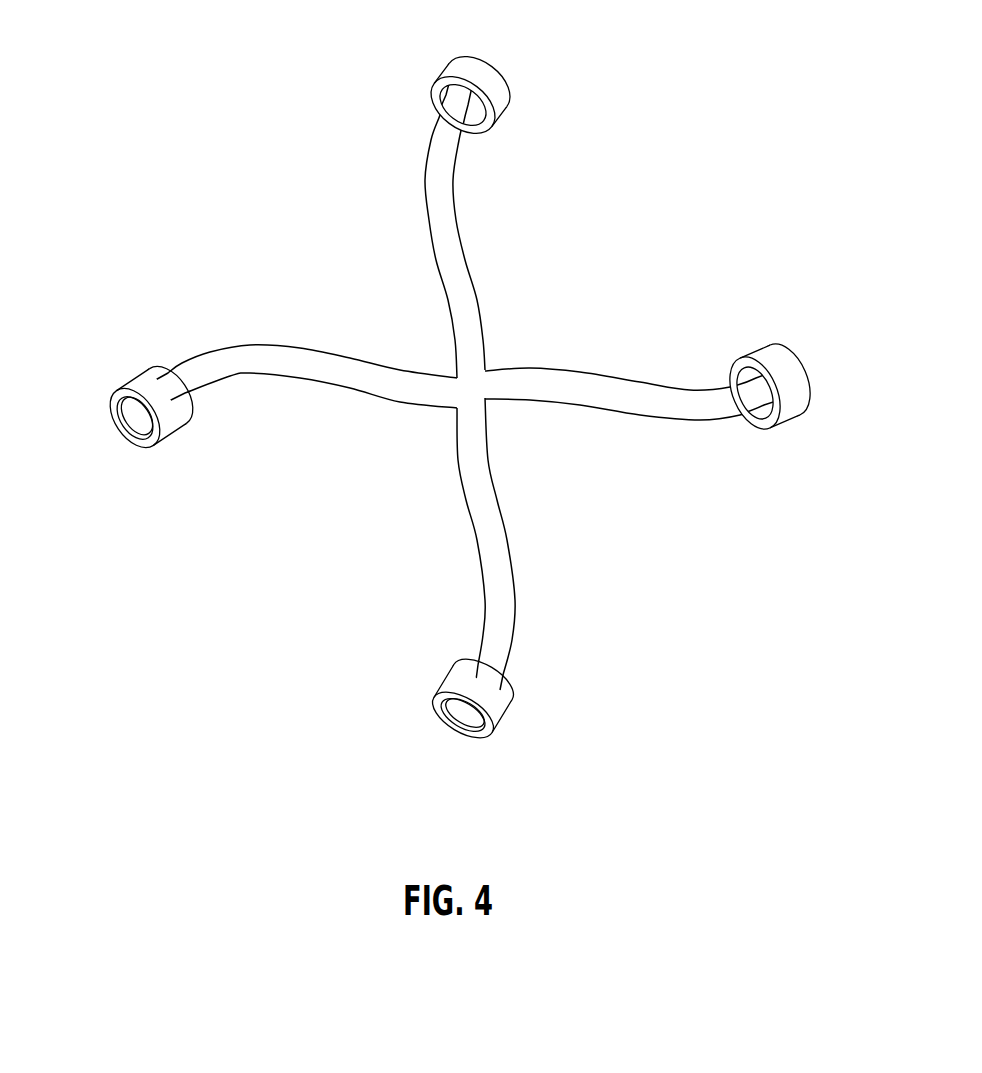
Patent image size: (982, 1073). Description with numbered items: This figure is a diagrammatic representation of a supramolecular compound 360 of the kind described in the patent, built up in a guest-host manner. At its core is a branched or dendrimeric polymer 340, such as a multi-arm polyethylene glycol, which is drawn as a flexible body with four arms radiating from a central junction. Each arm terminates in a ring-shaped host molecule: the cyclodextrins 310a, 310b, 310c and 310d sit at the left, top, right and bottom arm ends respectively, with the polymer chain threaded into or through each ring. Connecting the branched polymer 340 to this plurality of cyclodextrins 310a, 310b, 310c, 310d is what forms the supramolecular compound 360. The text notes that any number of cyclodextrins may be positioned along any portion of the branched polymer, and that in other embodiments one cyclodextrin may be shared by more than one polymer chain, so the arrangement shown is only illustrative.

The supramolecular compound 360 is at (460, 391).
The branched or dendrimeric polymer 340 is at (487, 410).
The cyclodextrin 310a is at (130, 390).
The cyclodextrin 310b is at (493, 70).
The cyclodextrin 310c is at (793, 360).
The cyclodextrin 310d is at (507, 713).